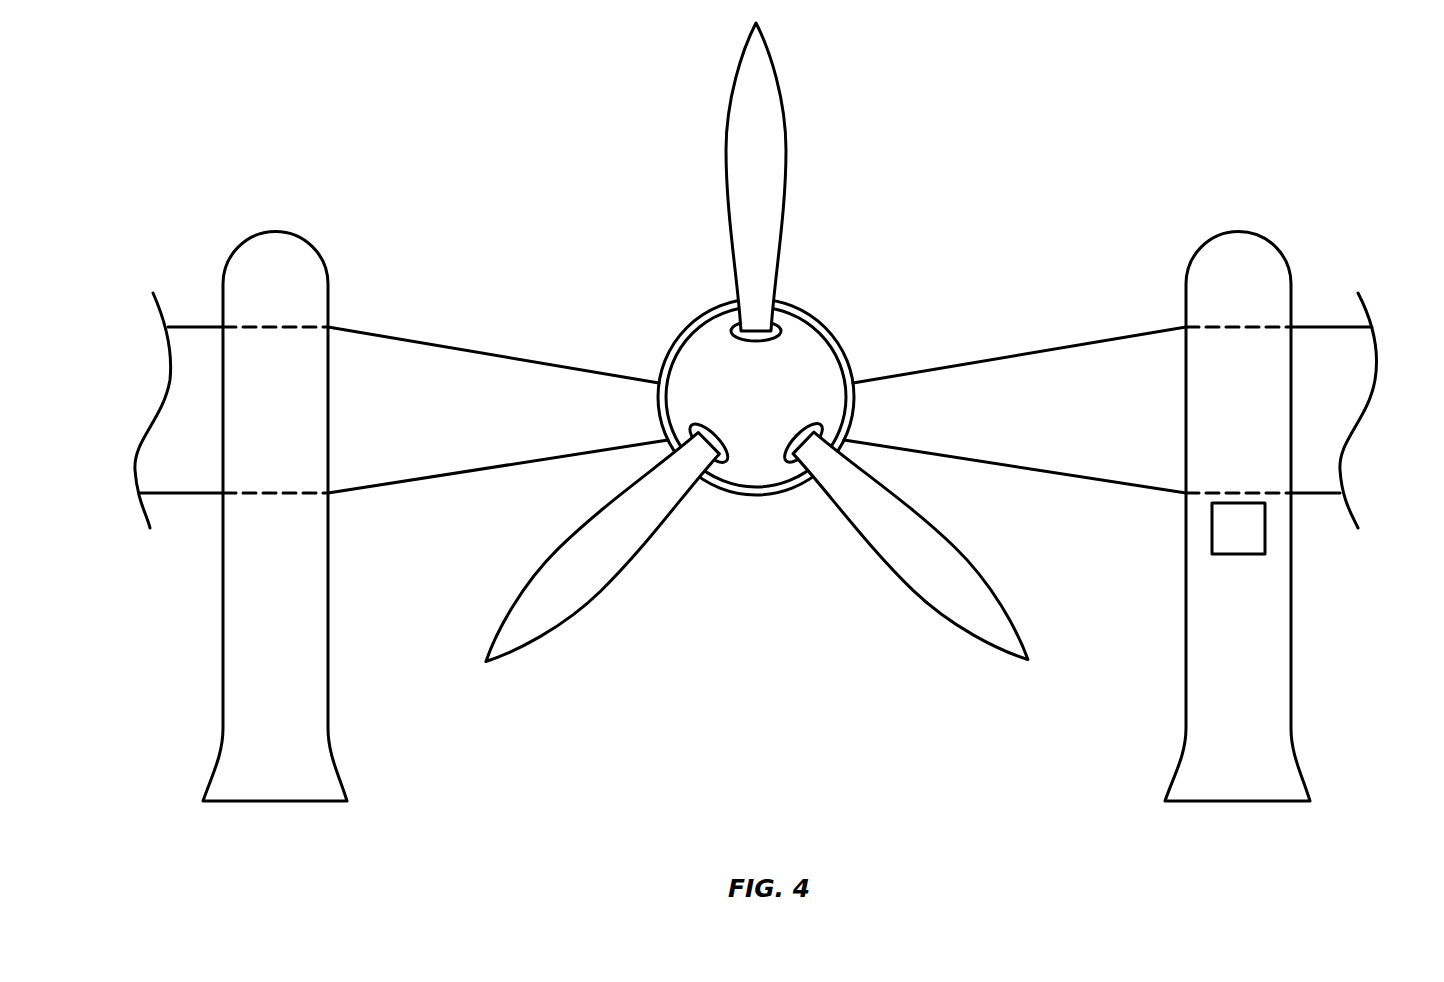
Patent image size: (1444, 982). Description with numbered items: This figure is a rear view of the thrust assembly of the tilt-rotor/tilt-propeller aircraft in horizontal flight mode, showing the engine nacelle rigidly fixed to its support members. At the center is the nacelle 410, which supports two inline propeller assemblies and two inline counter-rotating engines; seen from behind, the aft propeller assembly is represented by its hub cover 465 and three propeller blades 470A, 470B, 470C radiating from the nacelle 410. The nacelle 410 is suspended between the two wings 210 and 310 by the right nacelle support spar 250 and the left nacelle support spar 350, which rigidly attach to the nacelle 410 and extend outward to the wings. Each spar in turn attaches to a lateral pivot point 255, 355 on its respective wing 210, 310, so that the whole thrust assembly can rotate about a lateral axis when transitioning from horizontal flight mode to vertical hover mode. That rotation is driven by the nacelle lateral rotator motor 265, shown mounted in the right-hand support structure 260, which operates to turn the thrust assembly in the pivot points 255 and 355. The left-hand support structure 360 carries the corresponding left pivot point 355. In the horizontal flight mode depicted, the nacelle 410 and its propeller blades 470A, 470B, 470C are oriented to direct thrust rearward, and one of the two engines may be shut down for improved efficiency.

The wing 210 is at (1320, 323).
The right nacelle support spar 250 is at (1057, 472).
The lateral pivot point 255 is at (1203, 413).
The support pylon (right) 260 is at (1291, 672).
The nacelle lateral rotator motor 265 is at (1265, 535).
The wing 310 is at (202, 322).
The left nacelle support spar 350 is at (413, 483).
The lateral pivot point 355 is at (313, 397).
The support pylon (left) 360 is at (223, 632).
The nacelle 410 is at (823, 325).
The hub cover 465 is at (705, 350).
The propeller blade 470A is at (580, 615).
The propeller blade 470B is at (927, 612).
The propeller blade 470C is at (788, 127).